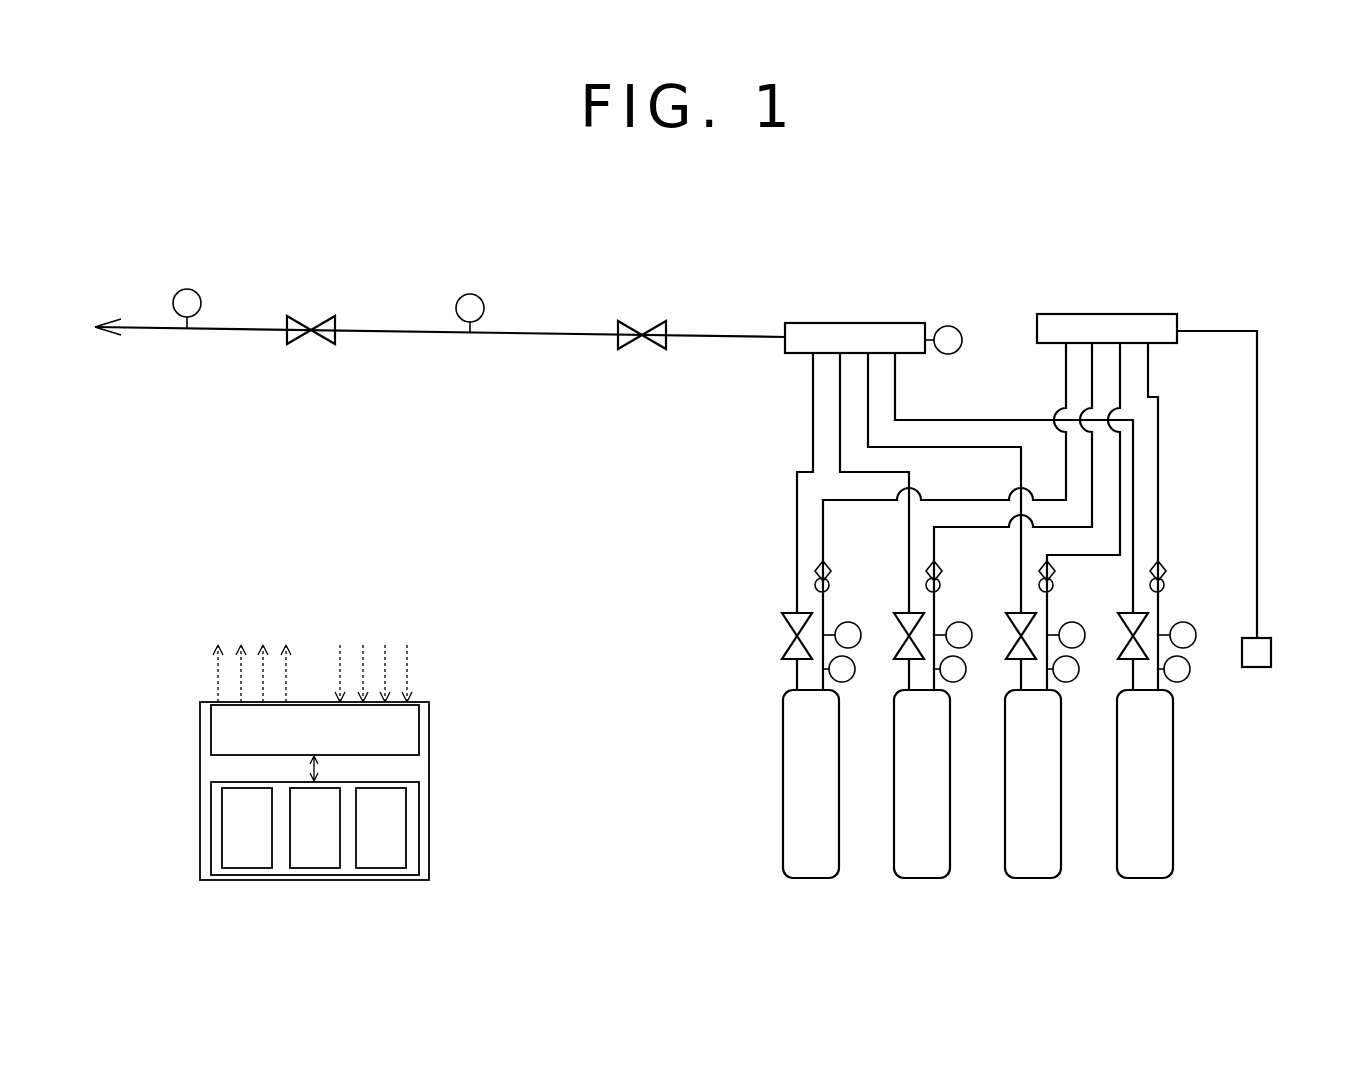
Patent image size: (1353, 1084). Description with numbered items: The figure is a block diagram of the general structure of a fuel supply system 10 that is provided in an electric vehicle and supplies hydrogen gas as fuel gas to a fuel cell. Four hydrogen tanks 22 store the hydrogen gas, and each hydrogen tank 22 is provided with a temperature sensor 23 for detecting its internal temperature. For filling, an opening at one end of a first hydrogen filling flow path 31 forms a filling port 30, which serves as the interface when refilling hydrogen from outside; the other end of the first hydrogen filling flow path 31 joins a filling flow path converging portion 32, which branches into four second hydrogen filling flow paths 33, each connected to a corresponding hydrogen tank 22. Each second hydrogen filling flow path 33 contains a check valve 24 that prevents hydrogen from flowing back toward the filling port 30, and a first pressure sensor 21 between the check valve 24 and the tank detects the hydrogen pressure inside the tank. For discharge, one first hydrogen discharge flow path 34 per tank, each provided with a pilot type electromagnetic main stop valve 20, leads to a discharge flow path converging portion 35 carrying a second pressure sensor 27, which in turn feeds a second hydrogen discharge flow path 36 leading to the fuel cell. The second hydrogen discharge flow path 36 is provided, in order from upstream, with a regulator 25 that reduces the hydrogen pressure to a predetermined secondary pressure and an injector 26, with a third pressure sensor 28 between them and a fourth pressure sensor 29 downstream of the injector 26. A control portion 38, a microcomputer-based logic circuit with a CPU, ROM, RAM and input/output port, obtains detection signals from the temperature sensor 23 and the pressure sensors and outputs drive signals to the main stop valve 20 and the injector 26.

The fuel supply system 10 is at (736, 231).
The main stop valve 20 is at (786, 642).
The first pressure sensor 21 is at (855, 626).
The hydrogen tank 22 is at (810, 879).
The temperature sensor 23 is at (851, 679).
The check valve 24 is at (830, 576).
The regulator 25 is at (645, 322).
The injector 26 is at (308, 320).
The second pressure sensor 27 is at (949, 326).
The third pressure sensor 28 is at (484, 308).
The fourth pressure sensor 29 is at (201, 303).
The filling port 30 is at (1272, 652).
The first hydrogen filling flow path 31 is at (1258, 475).
The filling flow path converging portion 32 is at (1148, 315).
The second hydrogen filling flow path 33 is at (1092, 378).
The first hydrogen discharge flow path 34 is at (840, 397).
The discharge flow path converging portion 35 is at (798, 323).
The second hydrogen discharge flow path 36 is at (519, 337).
The control portion 38 is at (431, 745).